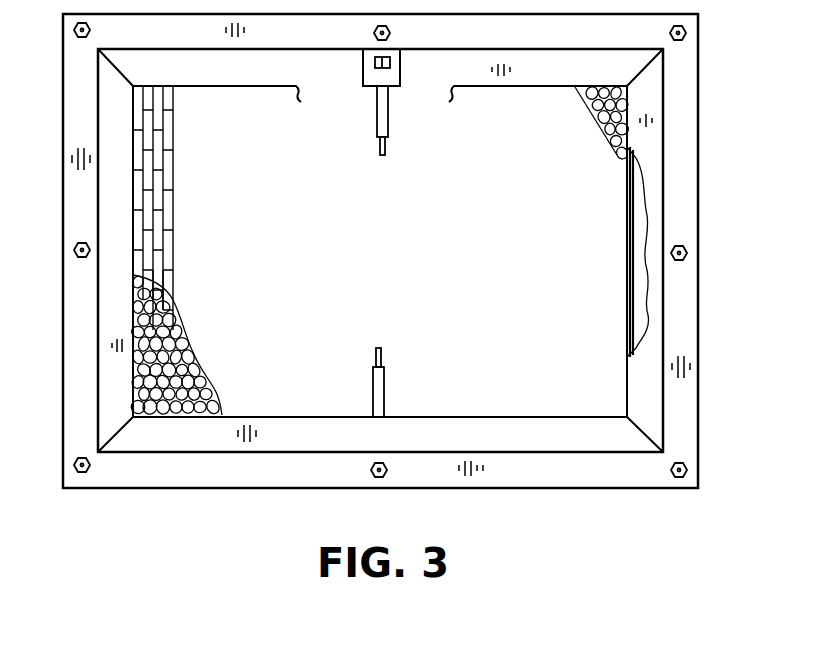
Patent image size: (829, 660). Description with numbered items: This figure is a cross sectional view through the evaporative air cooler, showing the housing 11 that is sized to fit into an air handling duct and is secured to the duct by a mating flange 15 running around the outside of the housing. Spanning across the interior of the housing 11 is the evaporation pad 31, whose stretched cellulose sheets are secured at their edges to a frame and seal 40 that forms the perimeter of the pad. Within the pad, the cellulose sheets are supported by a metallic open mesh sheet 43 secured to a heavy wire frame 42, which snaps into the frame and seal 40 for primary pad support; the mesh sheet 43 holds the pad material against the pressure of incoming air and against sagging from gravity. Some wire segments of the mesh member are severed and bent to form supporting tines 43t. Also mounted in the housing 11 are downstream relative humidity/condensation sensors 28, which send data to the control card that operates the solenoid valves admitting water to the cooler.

The mating flange 15 is at (683, 188).
The housing 11 is at (330, 447).
The metallic open mesh sheet 43 is at (174, 135).
The supporting tines 43t is at (174, 264).
The evaporation pad 31 is at (204, 388).
The heavy wire frame 42 is at (626, 249).
The relative humidity/condensation sensor 28 is at (383, 355).
The frame and seal 40 is at (565, 432).